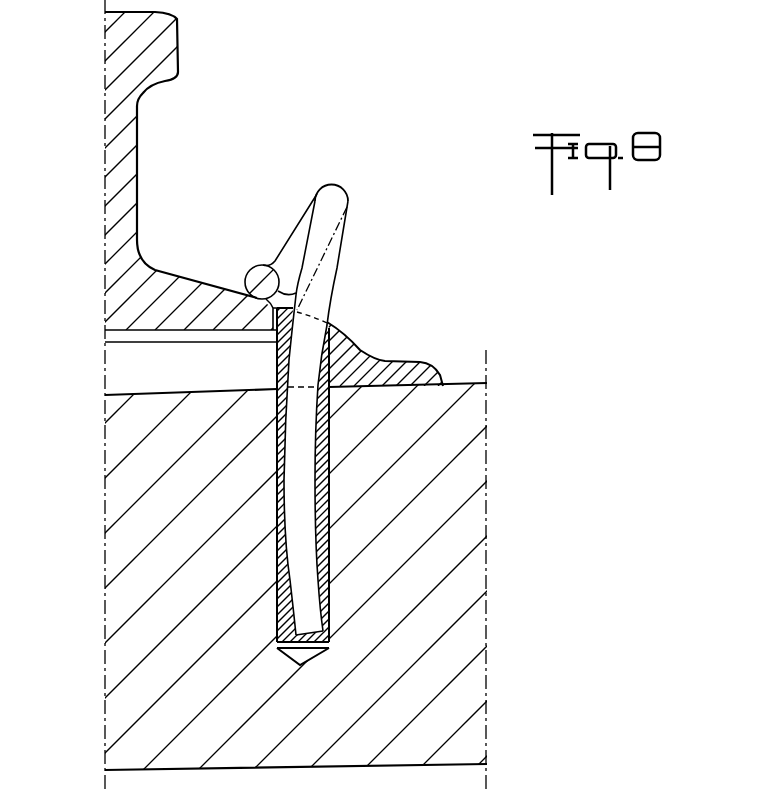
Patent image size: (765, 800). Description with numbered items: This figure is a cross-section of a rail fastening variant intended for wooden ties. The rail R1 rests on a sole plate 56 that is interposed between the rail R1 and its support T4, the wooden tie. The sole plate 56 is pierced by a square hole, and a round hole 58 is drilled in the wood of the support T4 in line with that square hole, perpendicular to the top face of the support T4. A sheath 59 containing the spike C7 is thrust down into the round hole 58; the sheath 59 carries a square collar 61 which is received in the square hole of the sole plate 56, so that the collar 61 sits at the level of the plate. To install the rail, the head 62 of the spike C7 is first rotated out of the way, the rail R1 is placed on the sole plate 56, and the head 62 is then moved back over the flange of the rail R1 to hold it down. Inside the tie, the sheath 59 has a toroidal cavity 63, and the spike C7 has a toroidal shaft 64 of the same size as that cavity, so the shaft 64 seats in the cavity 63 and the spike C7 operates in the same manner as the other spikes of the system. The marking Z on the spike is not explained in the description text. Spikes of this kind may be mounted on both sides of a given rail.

The rail R1 is at (123, 191).
The rail support T4 is at (135, 572).
The spring finger Z is at (291, 441).
The head 62 is at (330, 198).
The spike C7 is at (358, 204).
The square collar 61 is at (332, 358).
The sole plate 56 is at (378, 370).
The toroidal cavity 63 is at (285, 522).
The toroidal shaft 64 is at (305, 567).
The sheath 59 is at (283, 620).
The round hole 58 is at (278, 649).